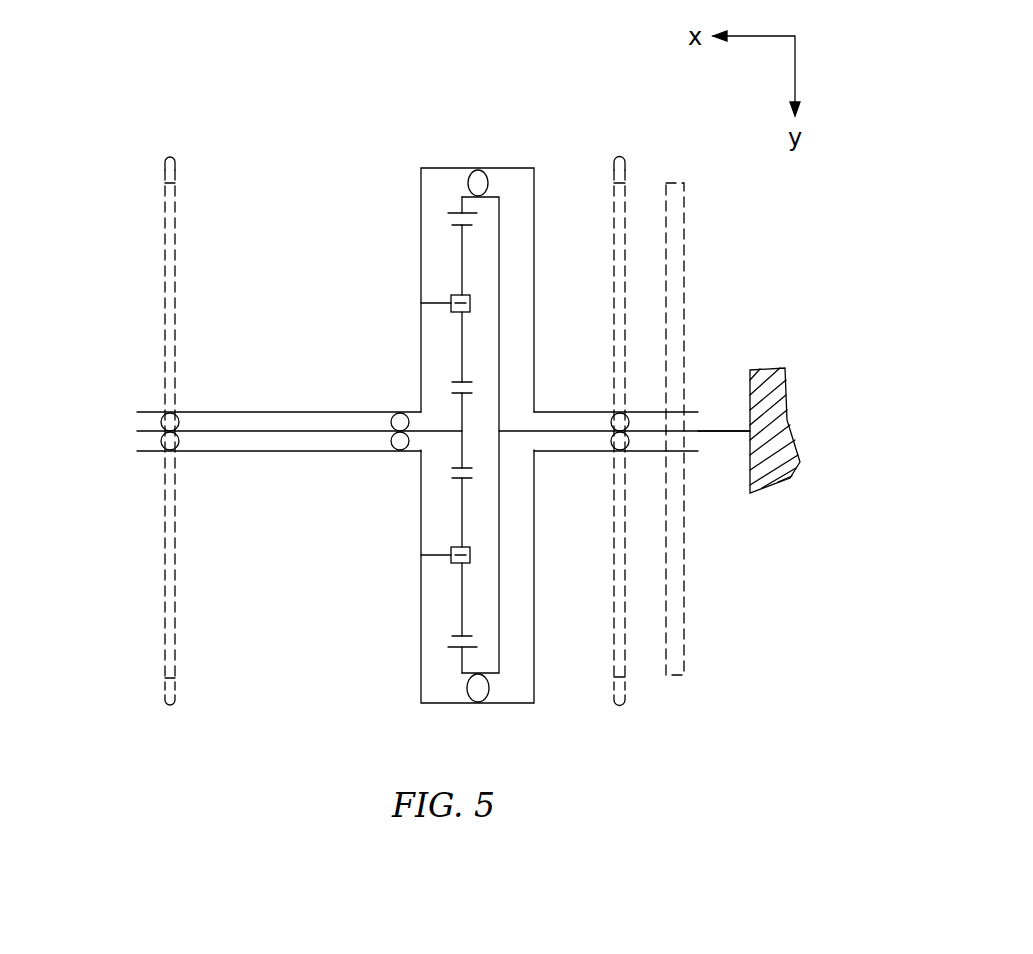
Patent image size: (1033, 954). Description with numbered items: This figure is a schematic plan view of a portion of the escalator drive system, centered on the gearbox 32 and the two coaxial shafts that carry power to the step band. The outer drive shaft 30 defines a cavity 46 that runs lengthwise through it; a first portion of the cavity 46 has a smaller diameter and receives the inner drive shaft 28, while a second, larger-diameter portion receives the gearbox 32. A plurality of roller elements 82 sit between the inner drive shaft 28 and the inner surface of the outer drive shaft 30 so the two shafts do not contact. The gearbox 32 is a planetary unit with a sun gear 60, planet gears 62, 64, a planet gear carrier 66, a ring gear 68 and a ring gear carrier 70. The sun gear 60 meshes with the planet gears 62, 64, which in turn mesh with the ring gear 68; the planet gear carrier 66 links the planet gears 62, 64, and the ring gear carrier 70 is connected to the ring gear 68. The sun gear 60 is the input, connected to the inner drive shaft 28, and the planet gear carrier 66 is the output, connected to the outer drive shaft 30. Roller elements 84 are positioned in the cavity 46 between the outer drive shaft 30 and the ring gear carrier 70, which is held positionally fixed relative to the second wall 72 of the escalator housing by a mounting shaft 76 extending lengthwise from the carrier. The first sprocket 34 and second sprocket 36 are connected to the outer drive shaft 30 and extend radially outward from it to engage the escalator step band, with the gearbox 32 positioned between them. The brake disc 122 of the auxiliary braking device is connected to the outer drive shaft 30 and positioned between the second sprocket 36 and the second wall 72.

The inner drive shaft 28 is at (205, 433).
The outer drive shaft 30 is at (280, 453).
The gearbox 32 is at (473, 145).
The first sprocket 34 is at (175, 230).
The second sprocket 36 is at (626, 185).
The cavity 46 is at (430, 228).
The sun gear 60 is at (462, 448).
The planet gear 62 is at (462, 345).
The planet gear 64 is at (462, 510).
The planet gear carrier 66 is at (421, 300).
The ring gear 68 is at (462, 265).
The ring gear carrier 70 is at (499, 220).
The second wall 72 is at (745, 368).
The mounting shaft 76 is at (722, 433).
The roller elements 82 is at (162, 422).
The roller elements 84 is at (467, 186).
The brake disc 122 is at (684, 218).